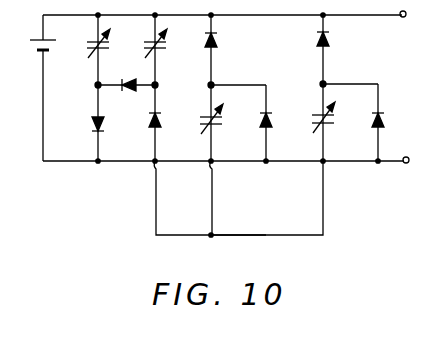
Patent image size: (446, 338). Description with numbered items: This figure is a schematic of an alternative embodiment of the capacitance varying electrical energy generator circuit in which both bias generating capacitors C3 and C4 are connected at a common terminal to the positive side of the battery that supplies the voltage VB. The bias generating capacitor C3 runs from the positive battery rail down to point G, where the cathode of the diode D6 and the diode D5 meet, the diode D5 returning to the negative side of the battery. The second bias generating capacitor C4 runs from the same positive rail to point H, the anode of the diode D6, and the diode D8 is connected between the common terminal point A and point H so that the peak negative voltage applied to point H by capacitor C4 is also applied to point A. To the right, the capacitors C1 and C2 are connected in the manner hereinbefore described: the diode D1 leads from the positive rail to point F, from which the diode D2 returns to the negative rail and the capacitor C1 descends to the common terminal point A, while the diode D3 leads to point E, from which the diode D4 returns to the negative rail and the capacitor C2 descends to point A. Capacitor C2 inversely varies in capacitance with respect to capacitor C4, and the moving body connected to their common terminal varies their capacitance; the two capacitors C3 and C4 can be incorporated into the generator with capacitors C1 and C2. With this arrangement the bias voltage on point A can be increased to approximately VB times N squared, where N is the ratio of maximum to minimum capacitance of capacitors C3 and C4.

The battery voltage VB is at (34, 43).
The bias generating capacitor C3 is at (85, 43).
The bias generating capacitor C4 is at (146, 41).
The diode D6 is at (126, 74).
The diode D1 is at (222, 45).
The diode D3 is at (335, 43).
The diode D5 is at (110, 128).
The diode D8 is at (167, 127).
The diode D2 is at (278, 127).
The diode D4 is at (390, 124).
The variable capacitor C1 is at (203, 114).
The variable capacitor C2 is at (314, 113).
The circuit point G is at (86, 88).
The circuit point H is at (157, 82).
The circuit point F is at (213, 82).
The circuit point E is at (325, 81).
The common terminal point A is at (268, 234).